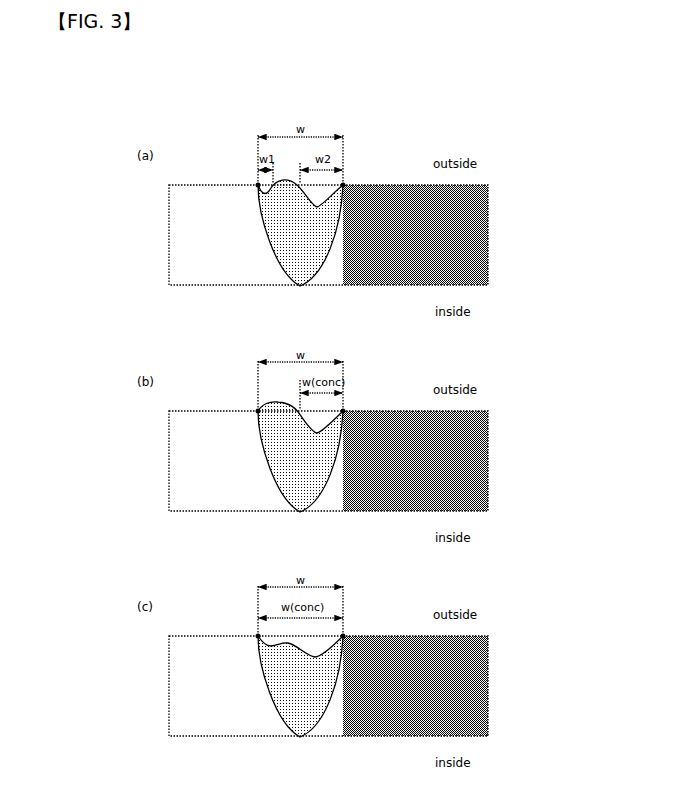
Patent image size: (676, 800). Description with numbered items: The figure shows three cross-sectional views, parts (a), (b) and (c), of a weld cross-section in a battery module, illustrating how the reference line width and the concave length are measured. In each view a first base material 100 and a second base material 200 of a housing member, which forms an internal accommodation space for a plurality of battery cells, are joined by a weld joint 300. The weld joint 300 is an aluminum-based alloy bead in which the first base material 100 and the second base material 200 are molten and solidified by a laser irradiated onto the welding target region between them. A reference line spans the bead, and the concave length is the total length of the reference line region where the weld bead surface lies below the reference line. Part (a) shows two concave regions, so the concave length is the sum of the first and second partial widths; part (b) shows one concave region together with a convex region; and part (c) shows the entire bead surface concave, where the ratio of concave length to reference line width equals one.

The first base material 100 is at (176, 239).
The second base material 200 is at (488, 239).
The weld joint 300 is at (300, 287).